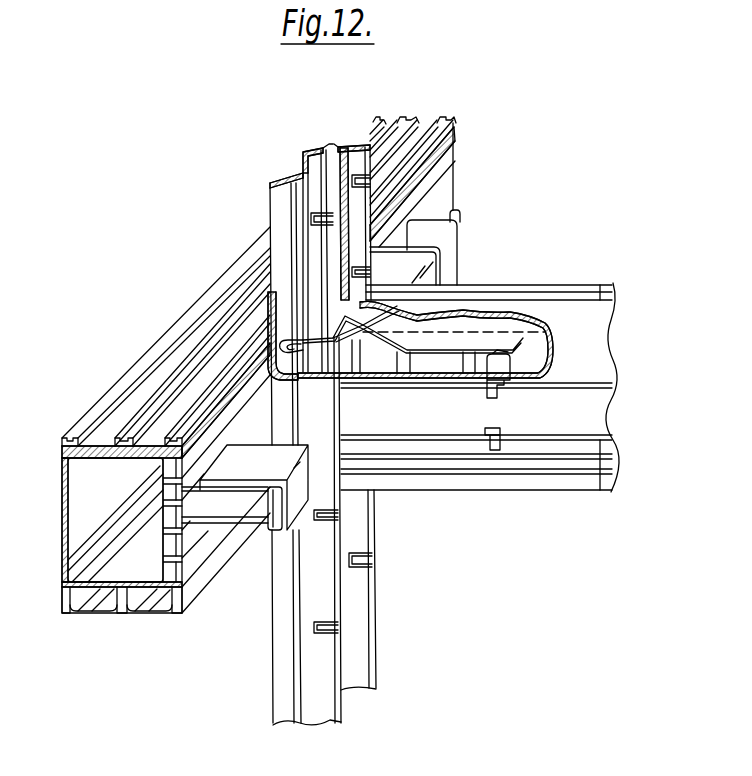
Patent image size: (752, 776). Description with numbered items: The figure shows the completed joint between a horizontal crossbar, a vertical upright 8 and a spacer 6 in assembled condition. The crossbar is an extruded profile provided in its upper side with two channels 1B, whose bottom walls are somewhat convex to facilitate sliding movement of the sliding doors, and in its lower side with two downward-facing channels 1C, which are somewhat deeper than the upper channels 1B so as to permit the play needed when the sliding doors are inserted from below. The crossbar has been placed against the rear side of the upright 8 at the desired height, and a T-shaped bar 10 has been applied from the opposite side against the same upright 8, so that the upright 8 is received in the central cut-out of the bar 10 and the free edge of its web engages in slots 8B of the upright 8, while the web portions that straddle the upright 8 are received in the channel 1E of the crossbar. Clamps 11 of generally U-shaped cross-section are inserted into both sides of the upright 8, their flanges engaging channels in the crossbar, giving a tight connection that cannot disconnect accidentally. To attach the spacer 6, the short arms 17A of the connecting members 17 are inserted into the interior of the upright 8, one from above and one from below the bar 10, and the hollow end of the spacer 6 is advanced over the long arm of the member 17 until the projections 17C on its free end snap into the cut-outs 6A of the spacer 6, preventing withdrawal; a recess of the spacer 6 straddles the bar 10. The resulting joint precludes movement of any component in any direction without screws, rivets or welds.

The channels 1B is at (182, 396).
The channels 1C is at (150, 605).
The channel 1E is at (163, 537).
The spacer 6 is at (590, 464).
The cut-outs 6A is at (498, 428).
The upright 8 is at (277, 192).
The slots 8B is at (375, 559).
The T-shaped bar 10 is at (247, 522).
The clamps 11 is at (290, 520).
The members 17 is at (402, 340).
The short arms 17A is at (301, 336).
The projections 17C is at (500, 352).